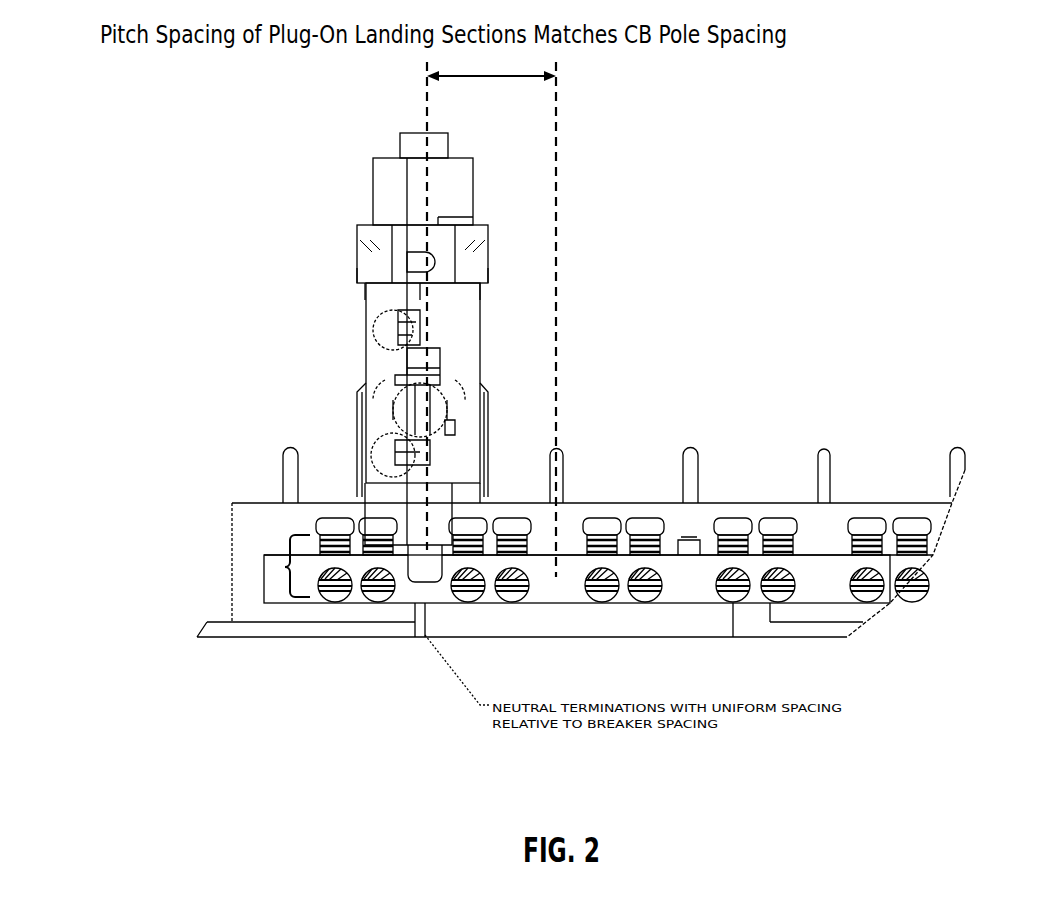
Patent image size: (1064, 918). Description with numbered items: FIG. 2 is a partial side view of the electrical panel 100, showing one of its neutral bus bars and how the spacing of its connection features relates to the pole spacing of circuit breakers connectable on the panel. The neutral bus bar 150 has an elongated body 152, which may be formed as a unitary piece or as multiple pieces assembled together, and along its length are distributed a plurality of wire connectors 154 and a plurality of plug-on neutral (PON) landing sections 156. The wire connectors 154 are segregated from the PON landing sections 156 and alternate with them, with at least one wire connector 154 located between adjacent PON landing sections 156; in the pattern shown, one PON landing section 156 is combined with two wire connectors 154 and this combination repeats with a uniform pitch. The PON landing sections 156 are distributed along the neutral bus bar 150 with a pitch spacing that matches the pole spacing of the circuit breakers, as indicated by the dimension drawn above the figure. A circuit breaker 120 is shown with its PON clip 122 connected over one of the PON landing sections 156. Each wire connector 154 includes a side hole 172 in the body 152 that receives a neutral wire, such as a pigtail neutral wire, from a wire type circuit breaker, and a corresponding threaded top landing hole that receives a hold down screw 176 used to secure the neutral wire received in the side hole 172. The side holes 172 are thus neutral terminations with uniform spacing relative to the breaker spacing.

The electrical panel 100 is at (968, 230).
The circuit breaker 120 is at (372, 198).
The plug-on neutral (PON) clip 122 is at (432, 570).
The neutral bus bar 150 is at (255, 587).
The elongated body 152 is at (267, 600).
The wire connector 154 is at (283, 567).
The plug-on neutral (PON) landing section 156 is at (553, 548).
The side hole 172 is at (335, 600).
The hold down screw 176 is at (645, 520).